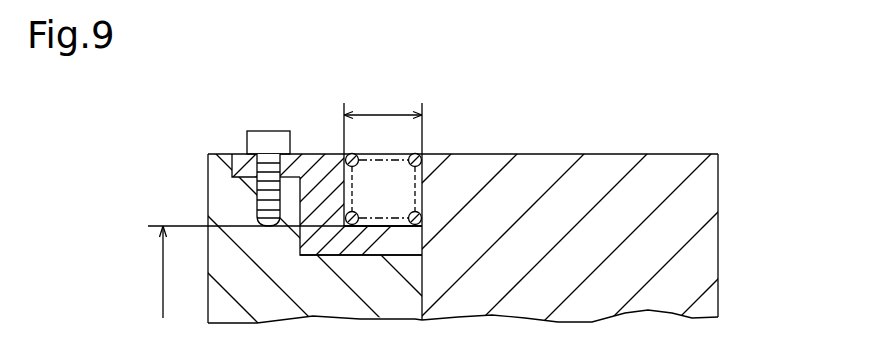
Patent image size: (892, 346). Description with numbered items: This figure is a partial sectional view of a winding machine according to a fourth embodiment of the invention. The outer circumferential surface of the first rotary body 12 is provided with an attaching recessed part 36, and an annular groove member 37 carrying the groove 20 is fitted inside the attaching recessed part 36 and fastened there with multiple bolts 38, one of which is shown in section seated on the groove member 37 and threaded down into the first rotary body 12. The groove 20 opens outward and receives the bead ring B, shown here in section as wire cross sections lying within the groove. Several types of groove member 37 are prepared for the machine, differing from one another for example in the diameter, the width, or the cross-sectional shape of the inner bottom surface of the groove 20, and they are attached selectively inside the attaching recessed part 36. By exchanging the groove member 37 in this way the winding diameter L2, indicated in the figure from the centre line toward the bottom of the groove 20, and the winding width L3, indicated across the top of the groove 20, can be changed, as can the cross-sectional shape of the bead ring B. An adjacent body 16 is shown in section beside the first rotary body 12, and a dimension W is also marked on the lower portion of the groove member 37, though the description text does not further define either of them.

The first rotary body 12 is at (207, 170).
The adjacent block 16 is at (708, 182).
The groove 20 is at (381, 235).
The attaching recessed part 36 is at (312, 251).
The annular groove member 37 is at (304, 150).
The bolt 38 is at (258, 137).
The bead ring B is at (425, 158).
The width W is at (358, 242).
The winding diameter L2 is at (270, 272).
The winding width L3 is at (383, 122).